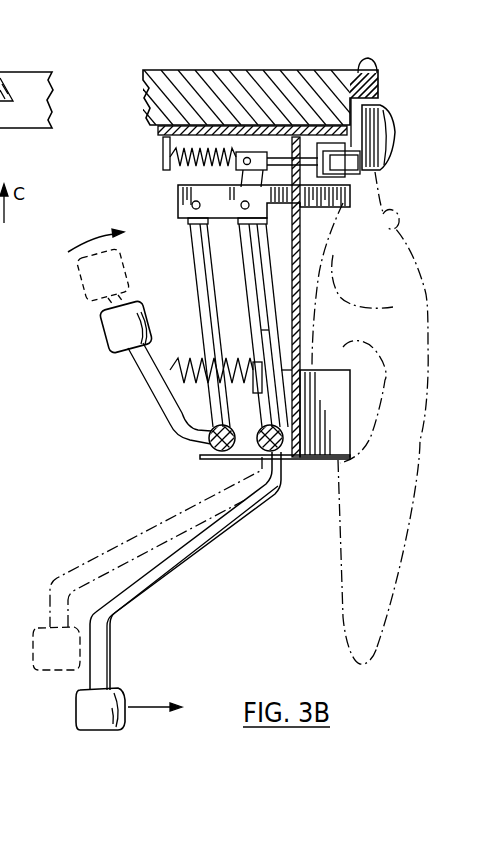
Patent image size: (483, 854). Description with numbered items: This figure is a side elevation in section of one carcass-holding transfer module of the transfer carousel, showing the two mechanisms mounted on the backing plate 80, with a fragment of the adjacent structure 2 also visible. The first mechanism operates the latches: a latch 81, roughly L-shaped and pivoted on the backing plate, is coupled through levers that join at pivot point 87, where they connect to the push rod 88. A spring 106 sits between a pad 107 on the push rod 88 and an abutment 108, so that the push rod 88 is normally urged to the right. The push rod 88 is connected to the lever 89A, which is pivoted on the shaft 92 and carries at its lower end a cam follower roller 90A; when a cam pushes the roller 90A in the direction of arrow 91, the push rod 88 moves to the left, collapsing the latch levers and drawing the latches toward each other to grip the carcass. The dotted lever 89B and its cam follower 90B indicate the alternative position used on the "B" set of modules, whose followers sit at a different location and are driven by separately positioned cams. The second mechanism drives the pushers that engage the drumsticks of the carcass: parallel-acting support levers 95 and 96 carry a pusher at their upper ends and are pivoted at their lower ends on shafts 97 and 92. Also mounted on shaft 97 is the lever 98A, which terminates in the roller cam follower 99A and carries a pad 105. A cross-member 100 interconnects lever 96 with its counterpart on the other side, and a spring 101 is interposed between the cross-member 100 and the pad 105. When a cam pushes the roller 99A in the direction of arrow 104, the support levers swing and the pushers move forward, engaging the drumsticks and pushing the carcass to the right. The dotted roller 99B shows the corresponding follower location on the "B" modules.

The housing 2 is at (26, 86).
The backing plate 80 is at (300, 252).
The latch 81 is at (392, 134).
The pivot point 87 is at (356, 178).
The push rod 88 is at (264, 208).
The lever 89A is at (246, 455).
The control rod in displaced position 89B is at (163, 525).
The cam follower roller 90A is at (104, 700).
The cam follower 90B is at (38, 650).
The arrow 91 is at (159, 719).
The shaft 92 is at (281, 451).
The support lever 95 is at (198, 272).
The support lever 96 is at (247, 245).
The shaft 97 is at (202, 456).
The lever 98A is at (162, 414).
The roller cam follower 99A is at (113, 325).
The finger grip in displaced position 99B is at (82, 278).
The cross-member 100 is at (257, 390).
The spring 101 is at (262, 330).
The arrow 104 is at (115, 236).
The pad 105 is at (185, 340).
The spring 106 is at (181, 175).
The pad 107 is at (237, 152).
The abutment 108 is at (162, 146).